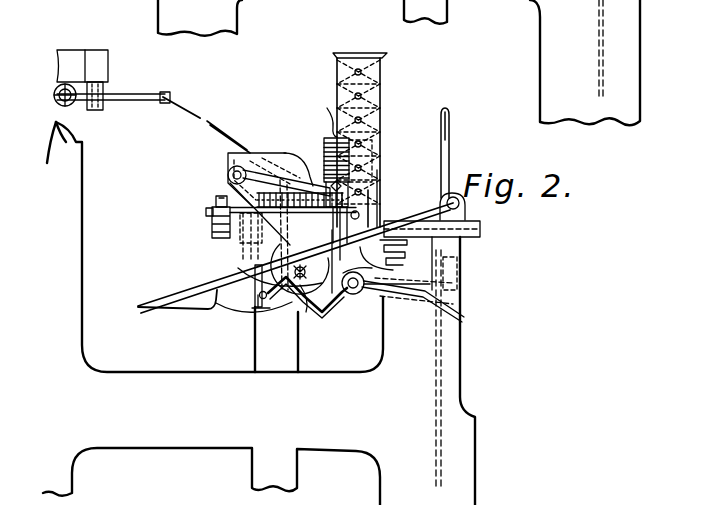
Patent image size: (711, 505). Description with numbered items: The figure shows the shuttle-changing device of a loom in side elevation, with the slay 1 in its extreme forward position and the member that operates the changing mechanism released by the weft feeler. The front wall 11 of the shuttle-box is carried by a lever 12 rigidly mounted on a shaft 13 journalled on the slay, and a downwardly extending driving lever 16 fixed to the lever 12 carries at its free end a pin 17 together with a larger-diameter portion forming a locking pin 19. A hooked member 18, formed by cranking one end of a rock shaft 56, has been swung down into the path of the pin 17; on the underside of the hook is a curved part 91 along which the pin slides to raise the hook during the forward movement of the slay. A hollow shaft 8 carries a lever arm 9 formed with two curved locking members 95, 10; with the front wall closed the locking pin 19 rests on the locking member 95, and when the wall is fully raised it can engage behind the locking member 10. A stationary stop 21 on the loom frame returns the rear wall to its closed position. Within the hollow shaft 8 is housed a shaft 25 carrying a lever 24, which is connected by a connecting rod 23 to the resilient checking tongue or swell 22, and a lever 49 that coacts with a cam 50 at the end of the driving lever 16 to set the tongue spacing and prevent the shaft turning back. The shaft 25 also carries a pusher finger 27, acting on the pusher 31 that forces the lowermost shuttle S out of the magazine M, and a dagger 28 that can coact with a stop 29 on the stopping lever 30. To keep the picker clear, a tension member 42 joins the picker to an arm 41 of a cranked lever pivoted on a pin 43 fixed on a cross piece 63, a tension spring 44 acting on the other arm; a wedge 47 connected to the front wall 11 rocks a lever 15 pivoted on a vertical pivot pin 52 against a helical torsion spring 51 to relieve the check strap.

The slay 1 is at (393, 3).
The hollow shaft 8 is at (336, 302).
The lever arm 9 is at (327, 314).
The curved locking member 10 is at (301, 312).
The front wall 11 is at (378, 208).
The lever 12 is at (285, 170).
The shaft 13 is at (245, 167).
The lever 15 is at (261, 172).
The driving lever 16 is at (263, 255).
The pin 17 is at (257, 294).
The hooked member 18 is at (151, 306).
The locking pin 19 is at (255, 308).
The stationary stop 21 is at (381, 263).
The resilient checking and catching tongue or swell 22 is at (210, 230).
The connecting rod 23 is at (207, 212).
The lever 24 is at (455, 270).
The shaft 25 is at (358, 295).
The pusher finger 27 is at (463, 323).
The dagger 28 is at (453, 304).
The stop 29 is at (453, 284).
The stopping lever 30 is at (446, 118).
The pusher 31 is at (452, 249).
The arm of cranked lever 41 is at (67, 100).
The tension member 42 is at (237, 147).
The pin 43 is at (97, 112).
The tension spring 44 is at (65, 92).
The wedge 47 is at (314, 174).
The lever 49 is at (263, 309).
The cam 50 is at (202, 303).
The helical torsion spring 51 is at (352, 145).
The vertical pivot pin 52 is at (322, 114).
The rock shaft 56 is at (440, 201).
The cross piece 63 is at (95, 57).
The curved part 91 is at (243, 272).
The curved locking member 95 is at (250, 308).
The magazine M is at (382, 73).
The shuttle S is at (372, 159).